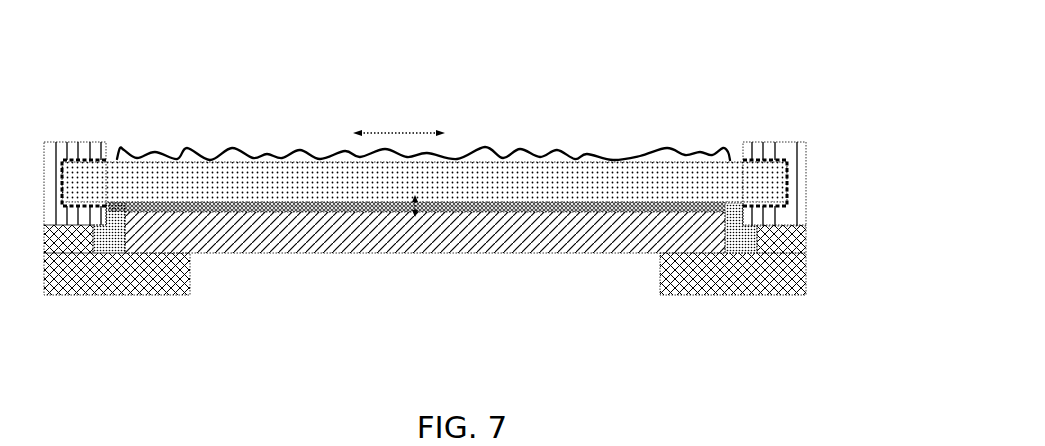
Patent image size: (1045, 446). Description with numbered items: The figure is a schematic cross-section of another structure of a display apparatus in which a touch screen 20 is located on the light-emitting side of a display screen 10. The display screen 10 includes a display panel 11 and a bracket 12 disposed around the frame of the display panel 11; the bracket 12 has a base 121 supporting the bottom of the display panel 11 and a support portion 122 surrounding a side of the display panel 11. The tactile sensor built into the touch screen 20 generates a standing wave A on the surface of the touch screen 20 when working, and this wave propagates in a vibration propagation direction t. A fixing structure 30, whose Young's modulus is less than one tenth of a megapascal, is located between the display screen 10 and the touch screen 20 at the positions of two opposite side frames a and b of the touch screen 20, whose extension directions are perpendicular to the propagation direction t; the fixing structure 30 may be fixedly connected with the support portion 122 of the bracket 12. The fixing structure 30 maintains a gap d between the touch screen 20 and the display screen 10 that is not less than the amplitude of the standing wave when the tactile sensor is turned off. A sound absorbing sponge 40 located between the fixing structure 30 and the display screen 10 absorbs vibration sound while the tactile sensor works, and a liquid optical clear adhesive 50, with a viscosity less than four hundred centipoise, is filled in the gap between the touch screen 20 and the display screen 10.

The display screen 10 is at (490, 254).
The display panel 11 is at (806, 230).
The bracket 12 is at (469, 260).
The base 121 is at (859, 248).
The support portion 122 is at (806, 253).
The touch screen 20 is at (537, 157).
The fixing structure 30 is at (806, 177).
The sound absorbing sponge 40 is at (803, 167).
The liquid optical clear adhesive 50 is at (93, 297).
The side frame a is at (60, 172).
The side frame b is at (806, 190).
The standing wave A is at (447, 152).
The vibration propagation direction t is at (399, 132).
The gap d is at (422, 206).